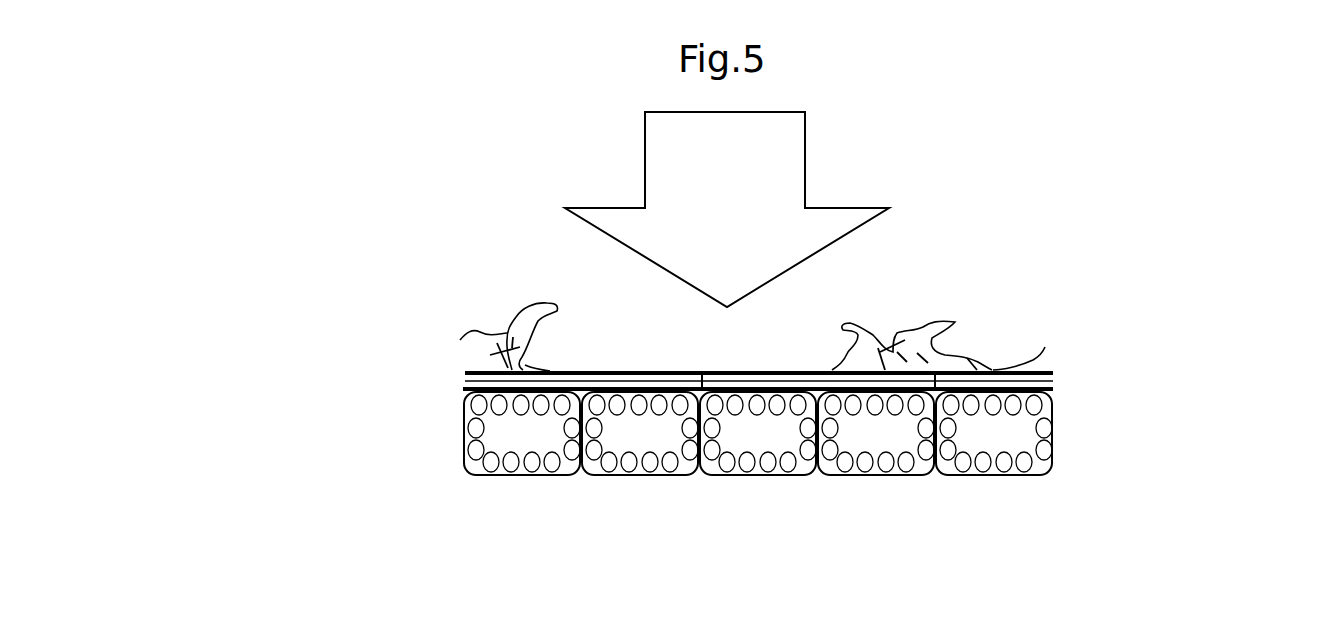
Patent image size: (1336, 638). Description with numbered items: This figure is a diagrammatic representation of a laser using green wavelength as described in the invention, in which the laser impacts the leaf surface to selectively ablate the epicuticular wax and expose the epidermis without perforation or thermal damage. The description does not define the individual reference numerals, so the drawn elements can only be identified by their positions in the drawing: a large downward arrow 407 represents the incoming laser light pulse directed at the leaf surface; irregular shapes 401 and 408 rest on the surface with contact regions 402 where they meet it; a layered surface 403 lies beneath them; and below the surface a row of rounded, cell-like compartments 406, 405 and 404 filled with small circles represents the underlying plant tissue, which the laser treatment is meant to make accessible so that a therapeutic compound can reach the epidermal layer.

The contaminant particle 401 is at (480, 309).
The adhesion points of particle 402 is at (482, 357).
The adhesive plate surface 403 is at (1075, 386).
The cell of carrier 404 is at (995, 490).
The cell of carrier 405 is at (595, 492).
The cell of carrier 406 is at (452, 465).
The applied pressure arrow 407 is at (595, 179).
The contaminant particle 408 is at (1022, 338).